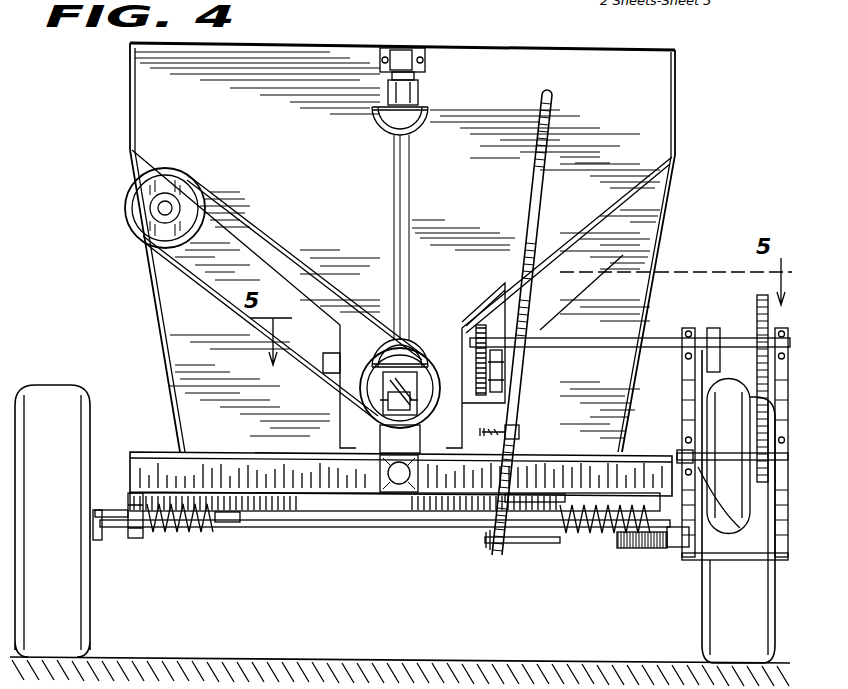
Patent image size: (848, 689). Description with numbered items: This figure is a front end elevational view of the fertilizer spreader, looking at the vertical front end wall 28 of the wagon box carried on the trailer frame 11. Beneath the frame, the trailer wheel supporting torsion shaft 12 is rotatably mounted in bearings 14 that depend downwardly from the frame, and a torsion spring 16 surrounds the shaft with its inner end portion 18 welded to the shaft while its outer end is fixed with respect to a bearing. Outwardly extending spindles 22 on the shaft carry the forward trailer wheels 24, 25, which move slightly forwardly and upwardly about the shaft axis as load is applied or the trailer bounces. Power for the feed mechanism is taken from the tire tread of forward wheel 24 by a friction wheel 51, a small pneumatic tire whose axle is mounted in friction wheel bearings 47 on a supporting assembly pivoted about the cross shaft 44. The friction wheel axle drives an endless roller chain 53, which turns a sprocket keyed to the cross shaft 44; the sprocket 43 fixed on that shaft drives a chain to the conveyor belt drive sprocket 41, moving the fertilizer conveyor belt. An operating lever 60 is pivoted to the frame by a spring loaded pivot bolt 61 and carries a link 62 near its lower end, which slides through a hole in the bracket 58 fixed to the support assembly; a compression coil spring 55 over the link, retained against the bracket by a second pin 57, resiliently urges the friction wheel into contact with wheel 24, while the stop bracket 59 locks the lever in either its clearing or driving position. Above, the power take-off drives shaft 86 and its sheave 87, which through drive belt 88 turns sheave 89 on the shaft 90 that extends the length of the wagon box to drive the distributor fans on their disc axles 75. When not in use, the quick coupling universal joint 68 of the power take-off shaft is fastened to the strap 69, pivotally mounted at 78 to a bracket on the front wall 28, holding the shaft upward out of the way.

The trailer frame 11 is at (420, 470).
The trailer wheel supporting torsion shaft 12 is at (312, 528).
The bearing 14 is at (135, 538).
The torsion spring 16 is at (180, 532).
The inner end portion 18 is at (230, 523).
The spindle 22 is at (97, 541).
The forward trailer wheel 24 is at (725, 622).
The forward trailer wheel 25 is at (65, 618).
The vertical front end wall 28 is at (655, 110).
The conveyor belt drive sprocket 41 is at (490, 383).
The sprocket 43 is at (504, 295).
The cross shaft 44 is at (618, 348).
The friction wheel bearing 47 is at (778, 478).
The friction wheel 51 is at (733, 398).
The endless roller chain 53 is at (758, 313).
The compression coil spring 55 is at (634, 548).
The second pin 57 is at (610, 548).
The bracket 58 is at (672, 548).
The stop bracket 59 is at (565, 497).
The operating lever 60 is at (533, 183).
The spring loaded pivot bolt 61 is at (521, 433).
The link 62 is at (540, 547).
The quick coupling universal joint 68 is at (420, 90).
The strap 69 is at (388, 76).
The disc axle 75 is at (502, 386).
The pivot mounting 78 is at (426, 62).
The shaft 86 is at (420, 392).
The sheave 87 is at (378, 340).
The drive belt 88 is at (285, 255).
The sheave 89 is at (190, 182).
The shaft 90 is at (160, 208).